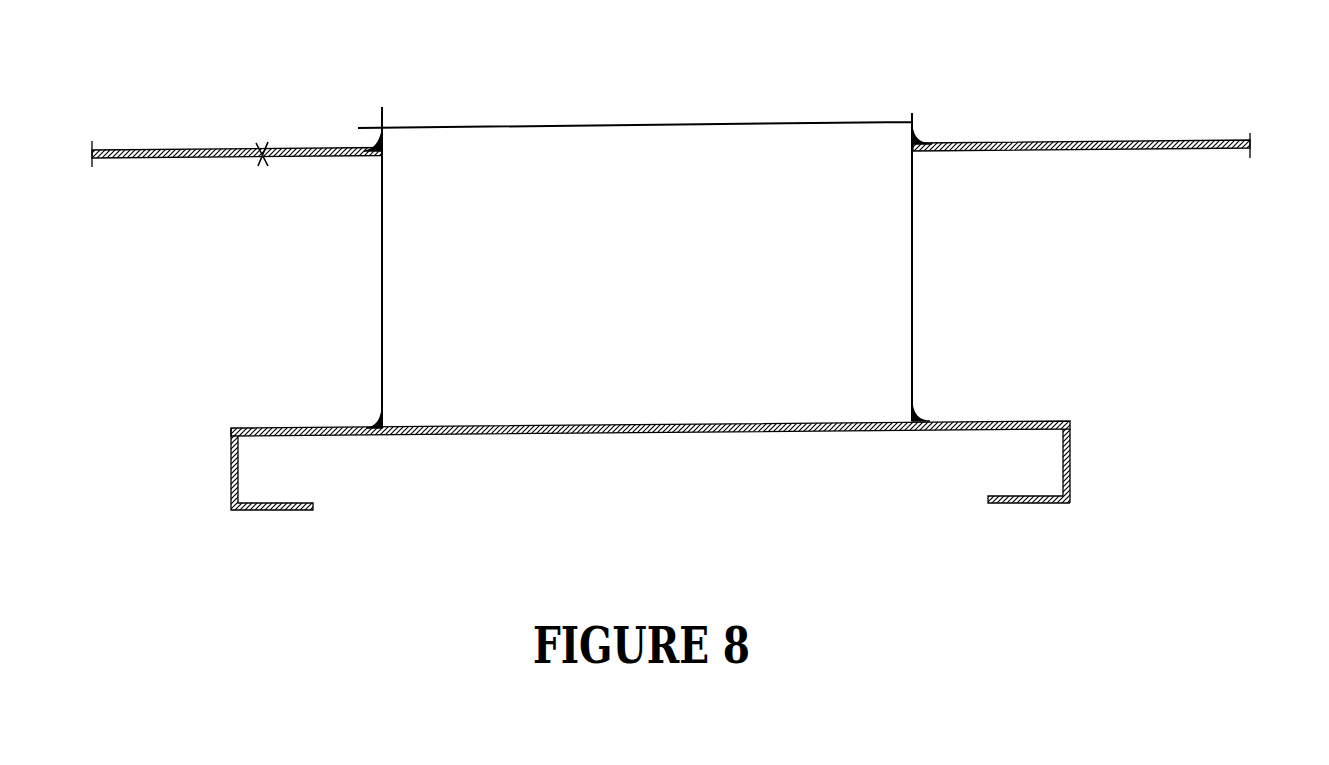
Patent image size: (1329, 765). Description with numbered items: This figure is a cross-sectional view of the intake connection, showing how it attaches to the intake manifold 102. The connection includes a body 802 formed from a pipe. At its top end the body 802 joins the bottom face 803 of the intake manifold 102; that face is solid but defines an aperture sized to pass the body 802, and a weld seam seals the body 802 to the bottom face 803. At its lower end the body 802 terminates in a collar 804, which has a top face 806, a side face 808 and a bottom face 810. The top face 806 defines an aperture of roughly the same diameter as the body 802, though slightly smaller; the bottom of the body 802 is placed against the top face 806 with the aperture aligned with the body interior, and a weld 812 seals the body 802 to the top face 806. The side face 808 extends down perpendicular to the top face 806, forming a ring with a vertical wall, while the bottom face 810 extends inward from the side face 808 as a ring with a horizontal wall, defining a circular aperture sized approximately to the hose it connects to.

The intake manifold 102 is at (1160, 136).
The bottom face 803 is at (993, 150).
The body 802 is at (897, 296).
The weld 812 is at (927, 407).
The collar 804 is at (707, 462).
The top face 806 is at (958, 423).
The side face 808 is at (1073, 468).
The bottom face 810 is at (1012, 504).